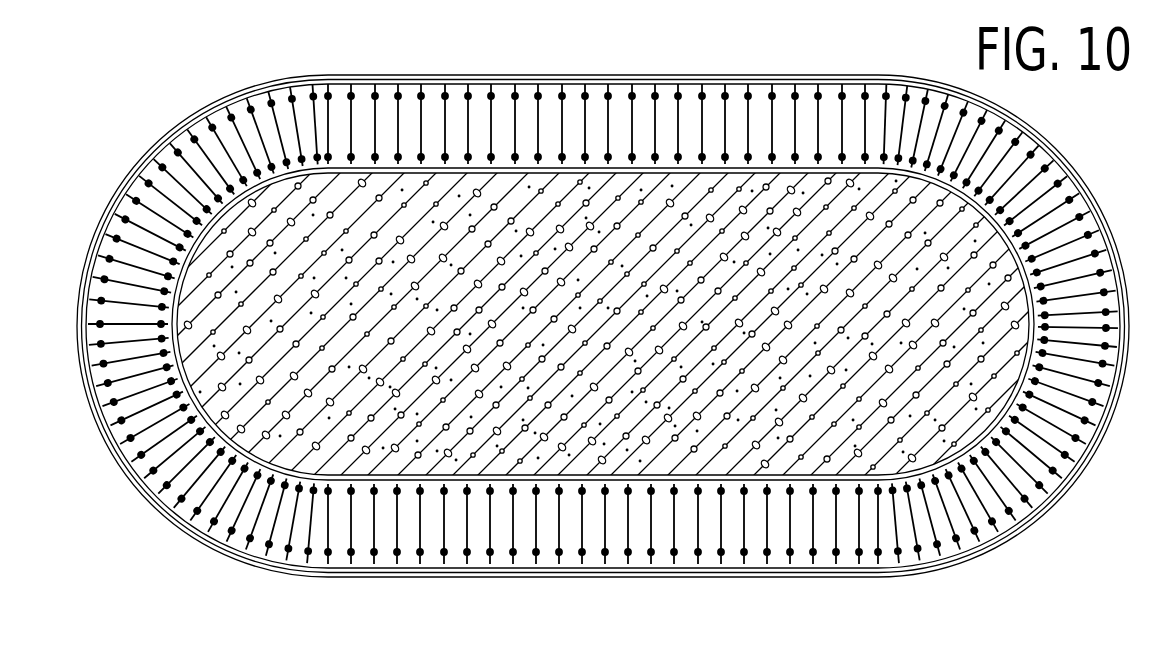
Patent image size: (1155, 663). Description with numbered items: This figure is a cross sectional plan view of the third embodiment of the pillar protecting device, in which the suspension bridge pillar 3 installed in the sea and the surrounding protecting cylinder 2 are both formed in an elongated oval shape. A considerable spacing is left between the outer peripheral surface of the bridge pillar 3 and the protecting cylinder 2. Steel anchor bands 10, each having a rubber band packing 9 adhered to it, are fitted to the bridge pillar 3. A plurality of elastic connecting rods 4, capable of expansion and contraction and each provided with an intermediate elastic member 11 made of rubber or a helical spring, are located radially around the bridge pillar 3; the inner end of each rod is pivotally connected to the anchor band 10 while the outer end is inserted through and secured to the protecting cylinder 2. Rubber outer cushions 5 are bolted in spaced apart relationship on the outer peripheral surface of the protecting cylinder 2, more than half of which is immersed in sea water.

The protecting cylinder 2 is at (603, 311).
The suspension bridge pillar 3 is at (577, 272).
The elastic connecting rods 4 is at (621, 324).
The outer cushions 5 is at (1008, 113).
The rubber band packing 9 is at (1012, 275).
The anchor bands 10 is at (1031, 306).
The intermediate elastic member 11 is at (1090, 266).